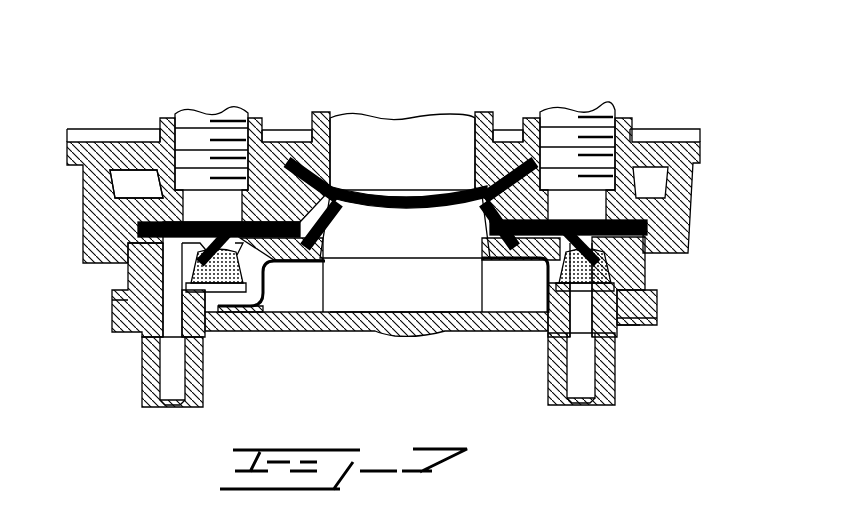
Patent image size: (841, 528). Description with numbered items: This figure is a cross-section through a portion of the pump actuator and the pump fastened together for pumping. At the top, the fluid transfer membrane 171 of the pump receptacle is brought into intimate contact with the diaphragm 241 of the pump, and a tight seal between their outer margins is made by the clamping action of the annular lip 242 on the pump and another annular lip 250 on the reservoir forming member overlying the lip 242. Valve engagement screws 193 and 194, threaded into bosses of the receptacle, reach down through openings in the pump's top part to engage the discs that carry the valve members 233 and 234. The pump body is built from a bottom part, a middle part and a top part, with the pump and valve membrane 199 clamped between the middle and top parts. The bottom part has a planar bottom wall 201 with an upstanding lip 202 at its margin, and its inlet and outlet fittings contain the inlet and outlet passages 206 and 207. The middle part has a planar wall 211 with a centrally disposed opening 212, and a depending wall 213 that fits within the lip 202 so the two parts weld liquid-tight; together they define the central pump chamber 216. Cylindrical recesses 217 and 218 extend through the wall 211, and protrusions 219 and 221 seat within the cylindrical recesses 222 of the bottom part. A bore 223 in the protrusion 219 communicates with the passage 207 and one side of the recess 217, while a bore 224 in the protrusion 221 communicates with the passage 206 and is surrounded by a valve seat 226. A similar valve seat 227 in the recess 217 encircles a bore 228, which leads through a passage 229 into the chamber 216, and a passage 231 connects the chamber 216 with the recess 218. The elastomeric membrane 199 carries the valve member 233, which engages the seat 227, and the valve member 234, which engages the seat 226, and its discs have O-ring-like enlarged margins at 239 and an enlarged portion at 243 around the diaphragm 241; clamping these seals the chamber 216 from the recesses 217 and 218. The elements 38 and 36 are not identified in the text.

The valve engagement screw 193 is at (201, 118).
The valve engagement screw 194 is at (571, 118).
The annular lip 242 is at (300, 142).
The enlarged margin 239 is at (147, 213).
The valve member 234 is at (668, 210).
The fluid transfer membrane 171 is at (437, 190).
The pump and valve membrane 199 is at (380, 189).
The annular lip 250 is at (325, 183).
The diaphragm 241 is at (425, 215).
The centrally disposed opening 212 is at (323, 238).
The cylindrical recess 218 is at (648, 247).
The enlarged portion 243 is at (289, 274).
The passage 231 is at (545, 266).
The planar wall 211 is at (505, 258).
The bottom wall 201 is at (421, 333).
The pump chamber 216 is at (371, 290).
The passage 229 is at (243, 307).
The bore 223 is at (150, 302).
The protrusion 219 is at (165, 330).
The bore 228 is at (207, 305).
The valve member 233 is at (180, 262).
The cylindrical recess 217 is at (173, 277).
The valve seat 227 is at (165, 304).
The left nozzle 38 is at (202, 388).
The outlet passage 207 is at (182, 380).
The depending wall 213 is at (622, 268).
The valve seat 226 is at (626, 283).
The upstanding lip 202 is at (657, 294).
The bore 224 is at (655, 312).
The protrusion 221 is at (608, 315).
The cylindrical recess 222 is at (165, 310).
The right nozzle 36 is at (607, 383).
The inlet passage 206 is at (575, 378).